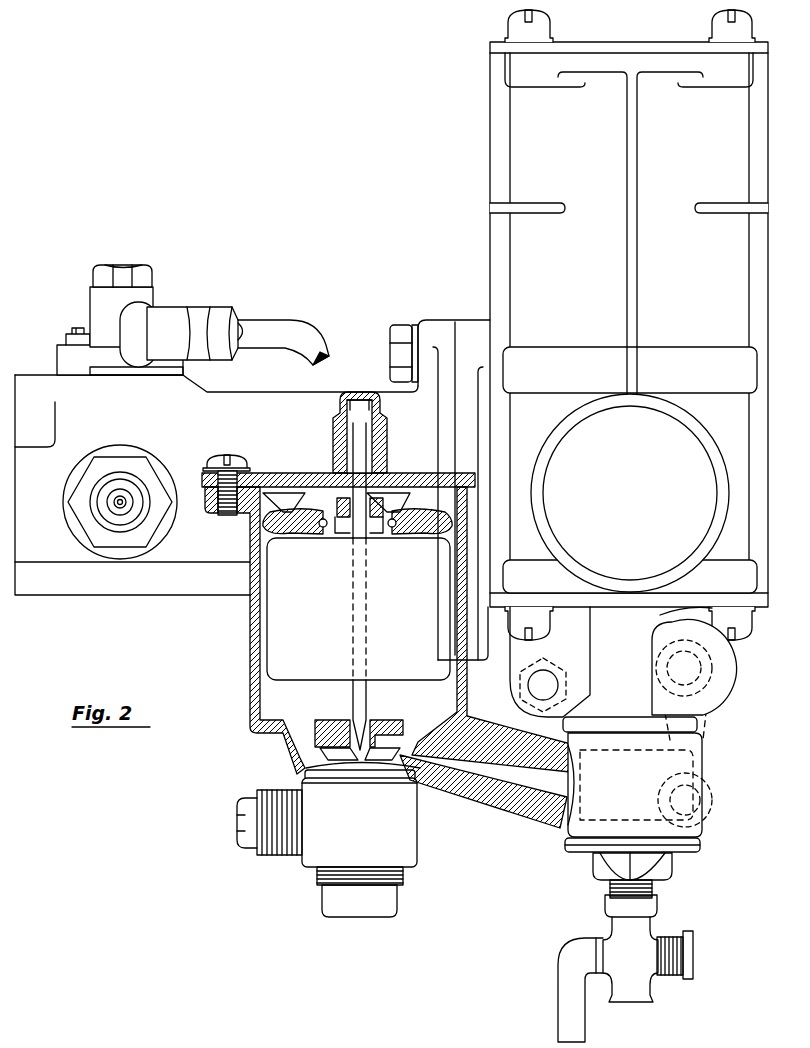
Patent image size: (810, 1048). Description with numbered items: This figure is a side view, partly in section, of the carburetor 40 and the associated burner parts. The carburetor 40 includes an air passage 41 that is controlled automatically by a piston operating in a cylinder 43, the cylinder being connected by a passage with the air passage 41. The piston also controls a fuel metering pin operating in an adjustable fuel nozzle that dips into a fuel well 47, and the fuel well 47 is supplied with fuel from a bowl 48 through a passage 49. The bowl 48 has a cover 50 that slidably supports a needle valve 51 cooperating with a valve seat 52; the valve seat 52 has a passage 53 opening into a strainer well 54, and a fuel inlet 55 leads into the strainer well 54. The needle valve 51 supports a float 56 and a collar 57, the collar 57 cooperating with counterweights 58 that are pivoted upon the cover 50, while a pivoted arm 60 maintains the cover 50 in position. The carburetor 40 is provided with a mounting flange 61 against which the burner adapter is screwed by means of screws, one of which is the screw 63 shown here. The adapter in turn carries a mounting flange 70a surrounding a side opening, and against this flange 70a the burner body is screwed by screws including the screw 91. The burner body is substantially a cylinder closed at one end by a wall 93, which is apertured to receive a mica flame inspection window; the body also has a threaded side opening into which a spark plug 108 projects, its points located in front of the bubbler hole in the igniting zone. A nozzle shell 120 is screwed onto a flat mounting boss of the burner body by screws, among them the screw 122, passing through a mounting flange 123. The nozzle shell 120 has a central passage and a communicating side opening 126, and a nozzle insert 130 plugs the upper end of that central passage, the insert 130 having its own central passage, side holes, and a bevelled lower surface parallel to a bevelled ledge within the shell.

The carburetor 40 is at (637, 30).
The cylinder 43 is at (522, 158).
The air passage 41 is at (685, 530).
The mounting flange 70a is at (467, 327).
The screw 91 is at (401, 332).
The wall 93 is at (26, 541).
The nozzle shell 120 is at (97, 293).
The screw 122 is at (72, 330).
The mounting flange 123 is at (62, 357).
The side opening 126 is at (148, 308).
The nozzle insert 130 is at (120, 266).
The spark plug 108 is at (90, 485).
The pivoted arm 60 is at (267, 471).
The cover 50 is at (392, 474).
The collar 57 is at (368, 534).
The counterweights 58 is at (274, 534).
The bowl 48 is at (250, 627).
The float 56 is at (297, 670).
The needle valve 51 is at (368, 693).
The valve seat 52 is at (342, 737).
The passage 53 is at (303, 758).
The strainer well 54 is at (328, 848).
The fuel inlet 55 is at (258, 820).
The passage 49 is at (502, 767).
The fuel well 47 is at (560, 820).
The mounting flange 61 is at (518, 710).
The screw 63 is at (528, 684).